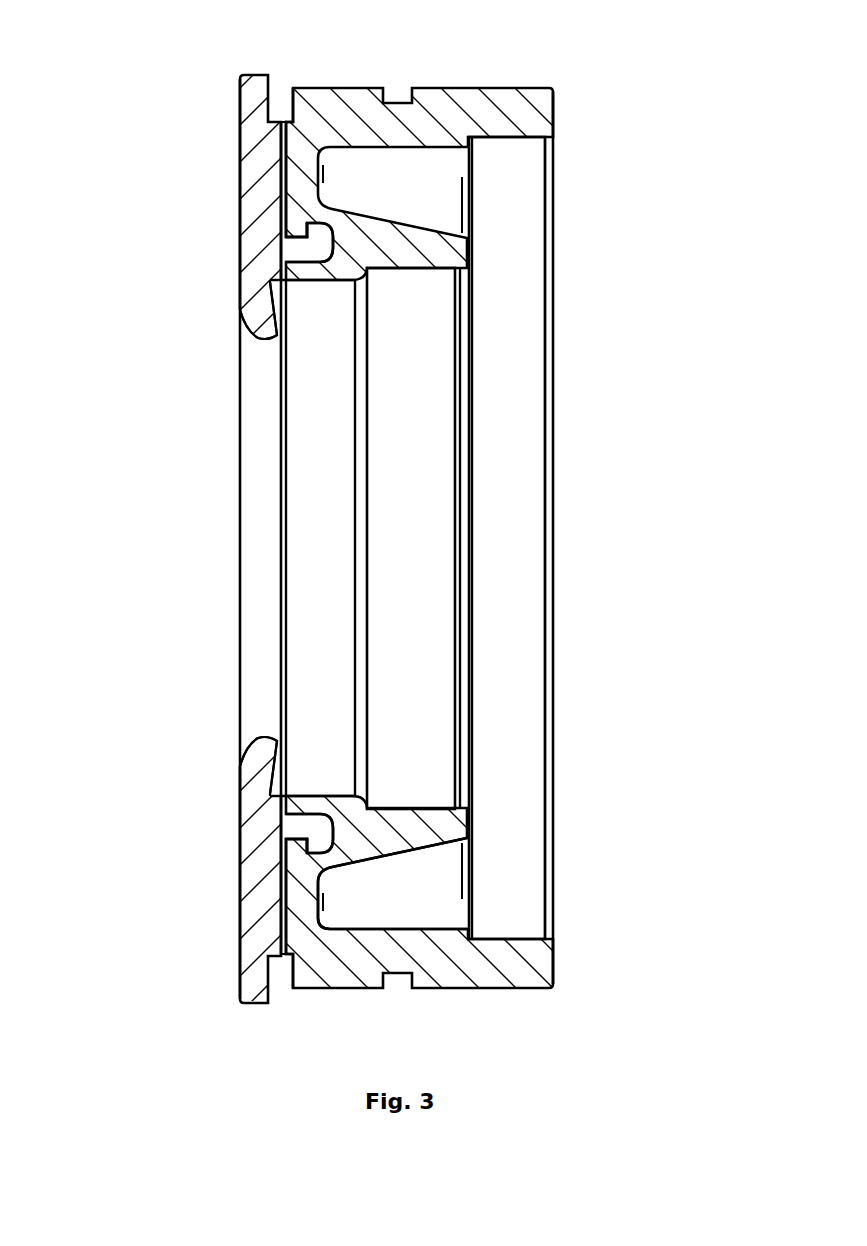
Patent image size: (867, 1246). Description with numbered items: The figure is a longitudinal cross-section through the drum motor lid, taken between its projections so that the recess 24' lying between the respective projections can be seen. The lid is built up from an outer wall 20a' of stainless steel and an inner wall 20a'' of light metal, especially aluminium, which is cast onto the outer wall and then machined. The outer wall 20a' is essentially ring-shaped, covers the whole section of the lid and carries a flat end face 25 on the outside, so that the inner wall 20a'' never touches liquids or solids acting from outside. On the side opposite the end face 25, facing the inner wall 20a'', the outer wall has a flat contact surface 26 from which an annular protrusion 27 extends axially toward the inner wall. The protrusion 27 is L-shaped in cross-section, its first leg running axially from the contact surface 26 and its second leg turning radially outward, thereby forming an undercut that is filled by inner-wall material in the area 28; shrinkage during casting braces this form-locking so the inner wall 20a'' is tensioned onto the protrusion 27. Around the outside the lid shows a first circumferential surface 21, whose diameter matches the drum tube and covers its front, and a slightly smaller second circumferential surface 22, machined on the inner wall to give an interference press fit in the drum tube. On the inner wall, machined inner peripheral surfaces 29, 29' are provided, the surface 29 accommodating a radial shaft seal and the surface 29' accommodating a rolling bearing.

The outer wall 20a' is at (172, 868).
The inner wall 20a'' is at (242, 993).
The first circumferential surface 21 is at (250, 58).
The second circumferential surface 22 is at (469, 72).
The recess 24' is at (446, 646).
The end face 25 is at (212, 238).
The contact surface 26 is at (300, 148).
The annular protrusion 27 is at (275, 795).
The area 28 is at (302, 226).
The inner peripheral surface 29 is at (494, 538).
The inner peripheral surface 29' is at (543, 538).